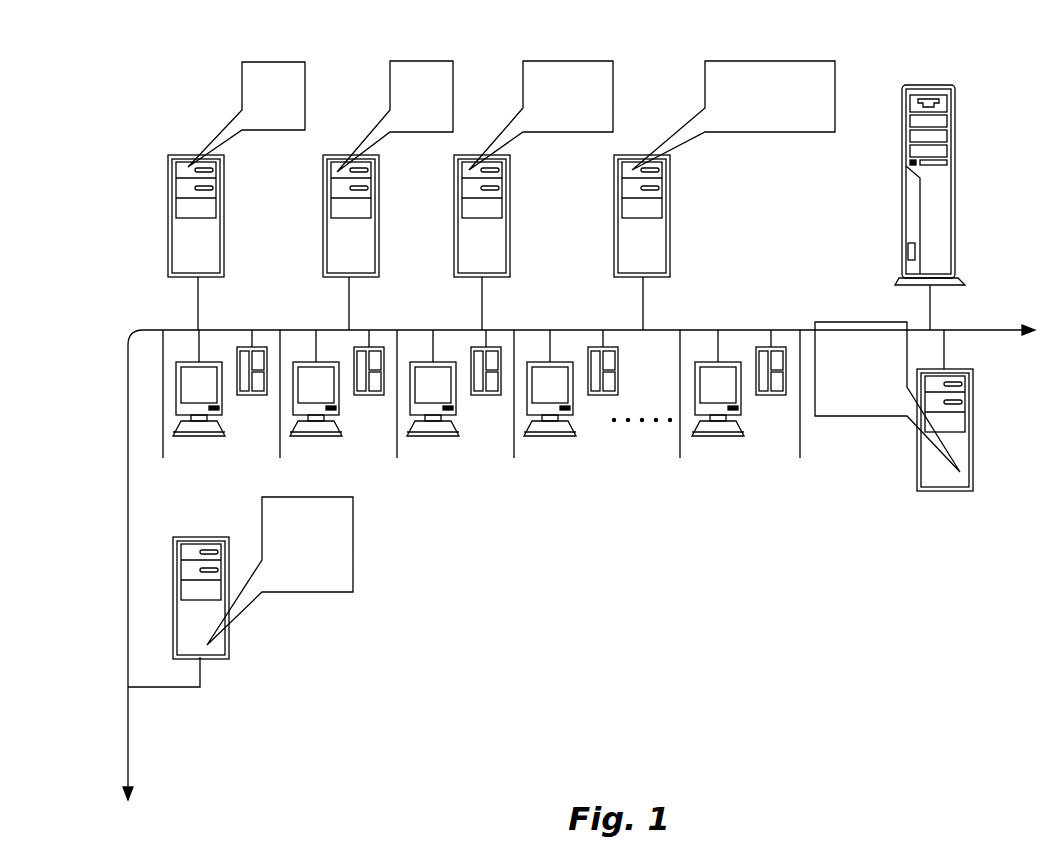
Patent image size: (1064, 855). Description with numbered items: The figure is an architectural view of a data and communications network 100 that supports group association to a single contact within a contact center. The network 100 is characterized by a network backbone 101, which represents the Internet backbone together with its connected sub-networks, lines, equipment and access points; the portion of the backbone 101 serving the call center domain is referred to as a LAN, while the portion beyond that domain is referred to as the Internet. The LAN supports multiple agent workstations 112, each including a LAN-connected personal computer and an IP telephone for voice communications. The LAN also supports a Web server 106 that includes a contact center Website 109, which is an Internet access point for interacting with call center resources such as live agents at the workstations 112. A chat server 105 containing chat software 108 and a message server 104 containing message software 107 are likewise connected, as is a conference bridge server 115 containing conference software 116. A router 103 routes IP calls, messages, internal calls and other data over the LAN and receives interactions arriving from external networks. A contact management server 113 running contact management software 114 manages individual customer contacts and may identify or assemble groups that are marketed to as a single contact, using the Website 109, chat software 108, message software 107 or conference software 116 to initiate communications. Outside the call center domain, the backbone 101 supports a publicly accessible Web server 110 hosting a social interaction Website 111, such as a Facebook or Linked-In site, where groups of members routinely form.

The data and communications network 100 is at (474, 624).
The network backbone 101 is at (128, 467).
The router 103 is at (902, 243).
The message server 104 is at (510, 220).
The chat server 105 is at (378, 222).
The Web server 106 is at (224, 220).
The message software 107 is at (568, 61).
The chat software 108 is at (422, 61).
The contact center Website 109 is at (278, 62).
The publicly accessible Web server 110 is at (228, 632).
The social interaction Website 111 is at (353, 560).
The agent workstations 112 is at (557, 482).
The contact management server 113 is at (917, 442).
The contact management software 114 is at (840, 322).
The conference bridge server 115 is at (670, 230).
The conference software 116 is at (770, 61).